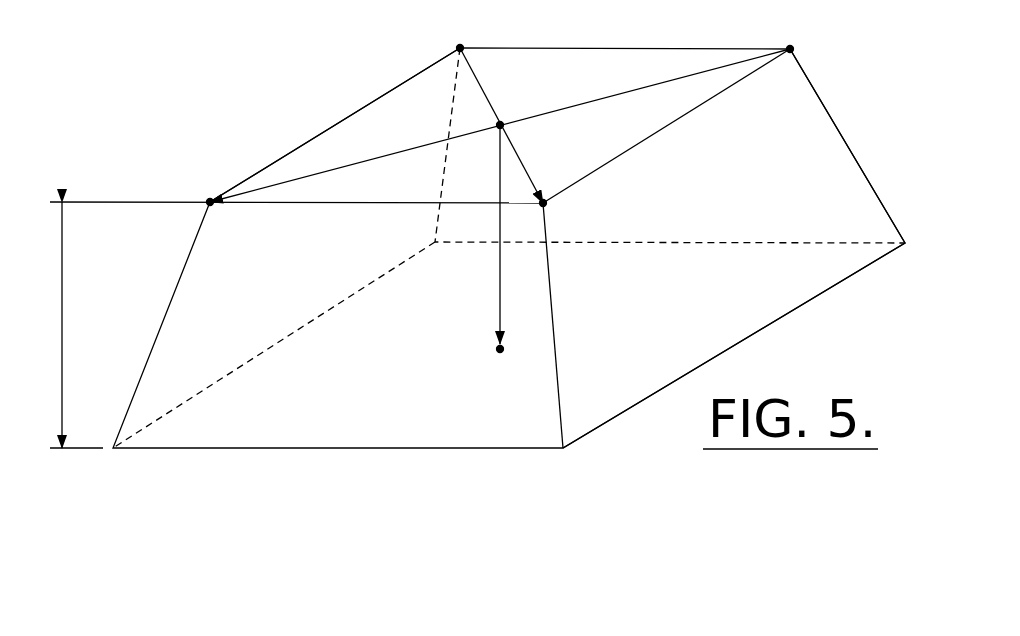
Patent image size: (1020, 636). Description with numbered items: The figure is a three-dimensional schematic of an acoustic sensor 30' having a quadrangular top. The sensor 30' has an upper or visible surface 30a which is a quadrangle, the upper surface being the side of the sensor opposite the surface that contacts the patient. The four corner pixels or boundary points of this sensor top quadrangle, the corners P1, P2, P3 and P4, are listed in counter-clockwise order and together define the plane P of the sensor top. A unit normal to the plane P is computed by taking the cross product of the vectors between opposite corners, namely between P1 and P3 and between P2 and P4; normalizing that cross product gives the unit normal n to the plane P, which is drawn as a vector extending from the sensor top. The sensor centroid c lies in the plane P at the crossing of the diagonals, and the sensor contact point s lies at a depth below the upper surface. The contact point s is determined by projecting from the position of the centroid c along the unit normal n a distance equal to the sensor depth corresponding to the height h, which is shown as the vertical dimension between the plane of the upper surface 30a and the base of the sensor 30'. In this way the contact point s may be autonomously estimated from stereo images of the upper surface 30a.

The upper surface 30a is at (391, 107).
The sensor 30' is at (750, 243).
The plane P is at (566, 88).
The corner P1 is at (197, 186).
The corner P2 is at (552, 184).
The corner P3 is at (807, 44).
The corner P4 is at (475, 36).
The sensor centroid c is at (506, 110).
The unit normal vector n is at (497, 297).
The contact point s is at (482, 345).
The height h is at (62, 325).